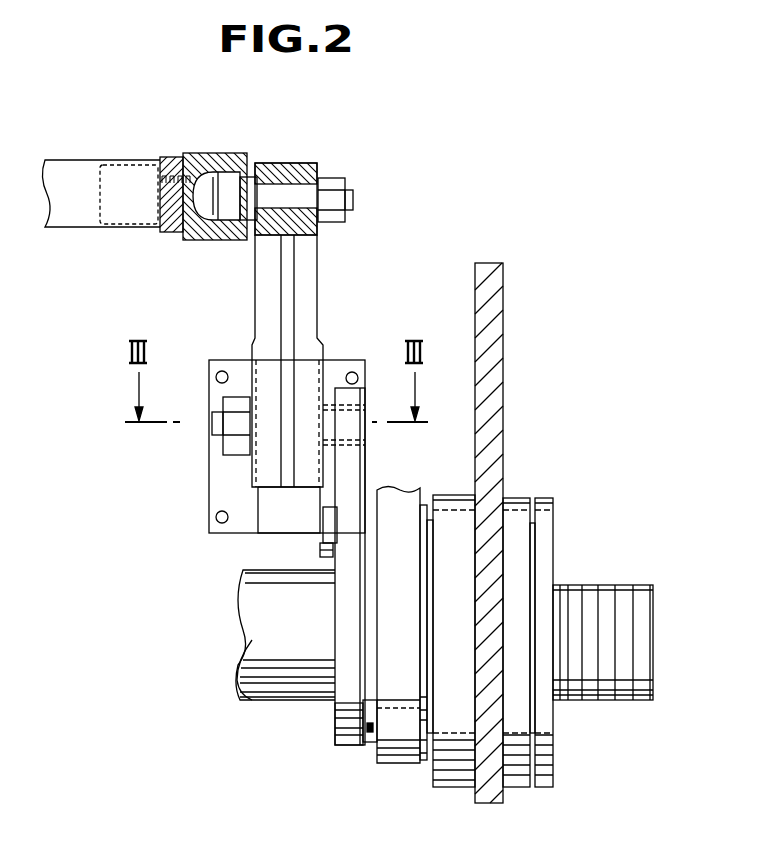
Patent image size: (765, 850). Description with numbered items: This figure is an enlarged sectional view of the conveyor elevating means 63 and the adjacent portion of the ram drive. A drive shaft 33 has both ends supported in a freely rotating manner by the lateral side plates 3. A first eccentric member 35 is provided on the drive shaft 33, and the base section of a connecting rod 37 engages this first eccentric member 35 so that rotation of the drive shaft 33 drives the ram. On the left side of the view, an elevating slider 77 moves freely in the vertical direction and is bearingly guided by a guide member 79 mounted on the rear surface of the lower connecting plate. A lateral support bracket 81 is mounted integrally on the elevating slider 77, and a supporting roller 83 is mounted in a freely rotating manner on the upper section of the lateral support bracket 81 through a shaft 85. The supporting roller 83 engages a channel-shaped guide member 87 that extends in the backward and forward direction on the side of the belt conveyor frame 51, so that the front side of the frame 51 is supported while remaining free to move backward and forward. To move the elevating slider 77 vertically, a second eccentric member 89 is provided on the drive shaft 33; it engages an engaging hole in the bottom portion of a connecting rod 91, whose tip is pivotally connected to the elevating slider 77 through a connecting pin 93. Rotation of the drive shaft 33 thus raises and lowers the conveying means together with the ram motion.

The lateral side plate 3 is at (497, 405).
The drive shaft 33 is at (260, 700).
The first eccentric member 35 is at (370, 733).
The connecting rod 37 is at (396, 762).
The belt conveyor frame 51 is at (84, 172).
The conveyor elevating means 63 is at (190, 538).
The elevating slider 77 is at (287, 493).
The guide member 79 is at (337, 370).
The lateral support bracket 81 is at (267, 327).
The supporting roller 83 is at (227, 215).
The shaft 85 is at (288, 195).
The channel-shaped guide member 87 is at (194, 160).
The second eccentric member 89 is at (358, 692).
The connecting rod 91 is at (345, 613).
The connecting pin 93 is at (367, 432).